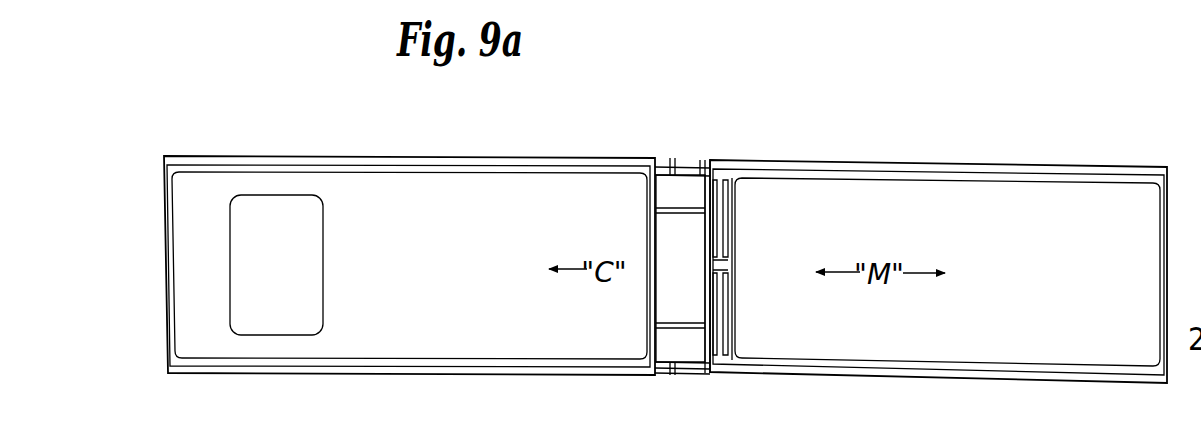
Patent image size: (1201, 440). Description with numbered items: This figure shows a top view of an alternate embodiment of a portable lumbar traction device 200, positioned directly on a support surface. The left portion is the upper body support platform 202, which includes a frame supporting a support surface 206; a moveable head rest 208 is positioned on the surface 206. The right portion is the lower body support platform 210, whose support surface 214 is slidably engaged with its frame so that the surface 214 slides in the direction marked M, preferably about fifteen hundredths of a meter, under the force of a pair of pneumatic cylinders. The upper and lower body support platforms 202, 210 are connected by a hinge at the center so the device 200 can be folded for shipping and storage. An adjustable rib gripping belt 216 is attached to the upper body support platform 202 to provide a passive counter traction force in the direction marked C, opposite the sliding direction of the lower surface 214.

The portable lumbar traction device 200 is at (1076, 141).
The upper body support platform 202 is at (374, 154).
The support surface 206 is at (421, 289).
The moveable head rest 208 is at (262, 284).
The lower body support platform 210 is at (936, 156).
The support surface 214 is at (977, 295).
The adjustable rib gripping belt 216 is at (673, 192).